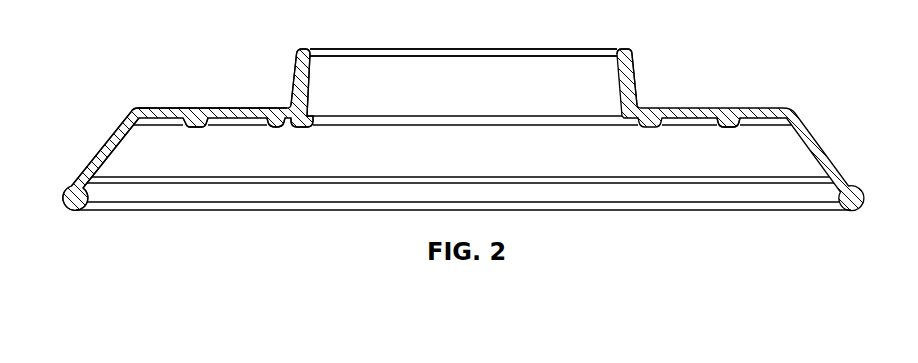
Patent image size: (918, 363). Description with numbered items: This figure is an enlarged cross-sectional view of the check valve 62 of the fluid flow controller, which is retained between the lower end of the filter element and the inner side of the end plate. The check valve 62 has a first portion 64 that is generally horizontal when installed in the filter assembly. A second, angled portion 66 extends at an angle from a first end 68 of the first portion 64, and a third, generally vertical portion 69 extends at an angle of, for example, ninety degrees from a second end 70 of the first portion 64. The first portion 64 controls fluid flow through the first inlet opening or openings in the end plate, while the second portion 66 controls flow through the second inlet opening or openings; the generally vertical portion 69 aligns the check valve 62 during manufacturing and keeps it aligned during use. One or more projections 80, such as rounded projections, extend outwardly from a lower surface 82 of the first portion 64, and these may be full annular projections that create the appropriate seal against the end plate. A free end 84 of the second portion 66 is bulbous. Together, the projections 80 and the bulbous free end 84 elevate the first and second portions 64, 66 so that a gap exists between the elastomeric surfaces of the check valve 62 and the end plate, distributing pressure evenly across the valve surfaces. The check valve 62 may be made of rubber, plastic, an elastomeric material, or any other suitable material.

The check valve 62 is at (784, 37).
The first portion 64 is at (173, 107).
The second, angled portion 66 is at (86, 168).
The first end 68 is at (136, 107).
The third, generally vertical portion 69 is at (310, 70).
The second end 70 is at (300, 128).
The projections 80 is at (193, 128).
The lower surface 82 is at (677, 120).
The free end 84 is at (78, 211).